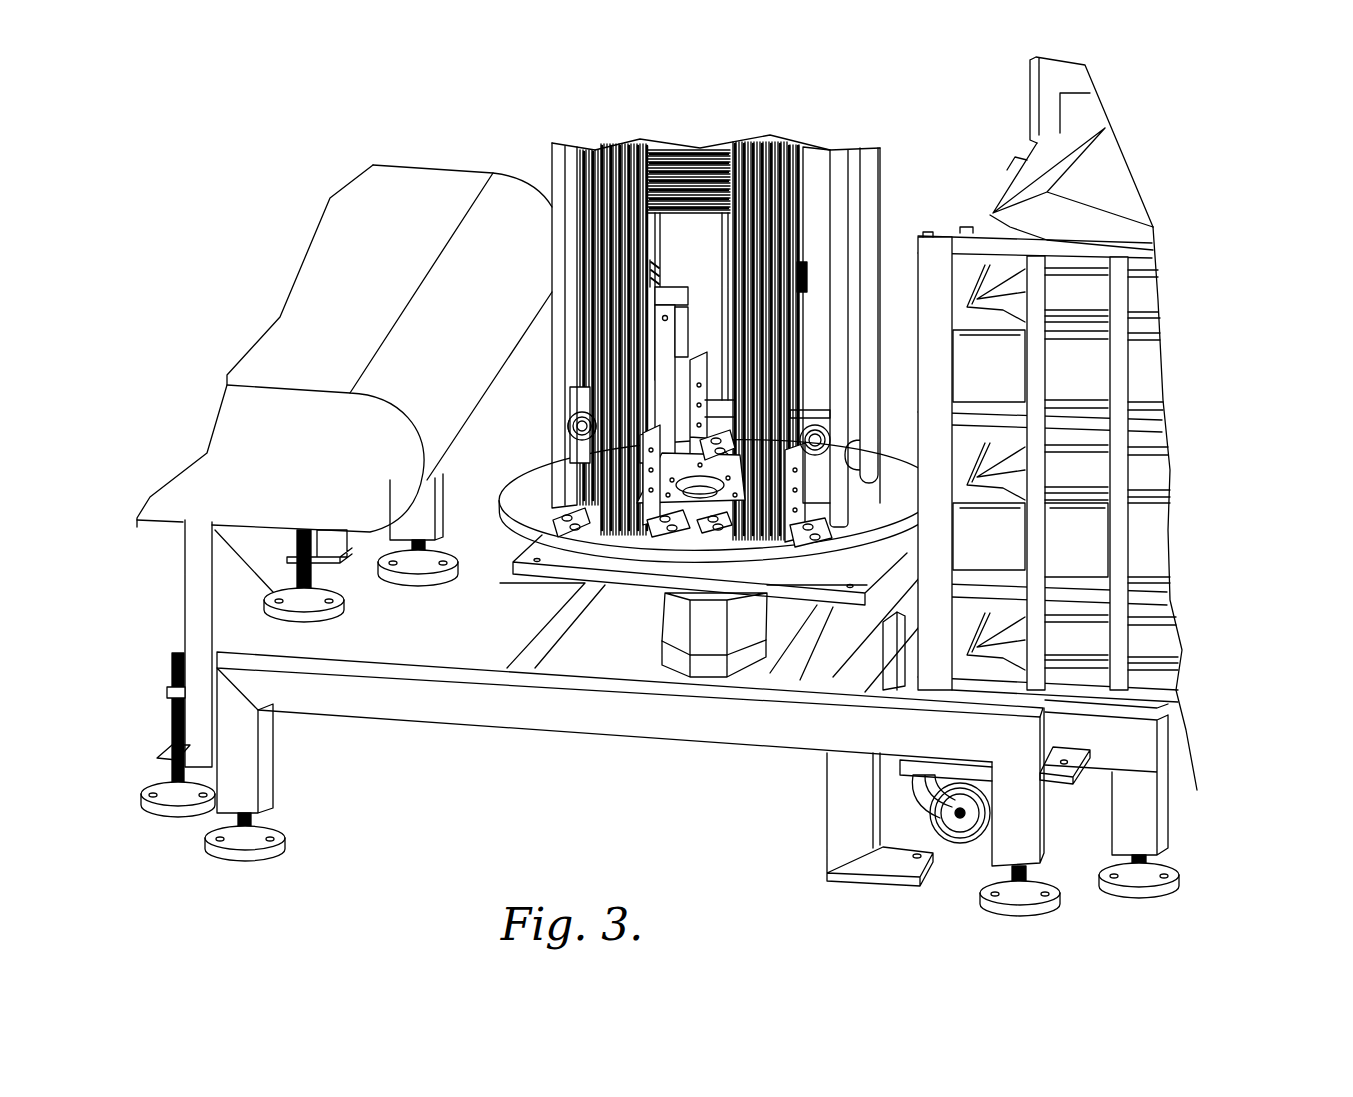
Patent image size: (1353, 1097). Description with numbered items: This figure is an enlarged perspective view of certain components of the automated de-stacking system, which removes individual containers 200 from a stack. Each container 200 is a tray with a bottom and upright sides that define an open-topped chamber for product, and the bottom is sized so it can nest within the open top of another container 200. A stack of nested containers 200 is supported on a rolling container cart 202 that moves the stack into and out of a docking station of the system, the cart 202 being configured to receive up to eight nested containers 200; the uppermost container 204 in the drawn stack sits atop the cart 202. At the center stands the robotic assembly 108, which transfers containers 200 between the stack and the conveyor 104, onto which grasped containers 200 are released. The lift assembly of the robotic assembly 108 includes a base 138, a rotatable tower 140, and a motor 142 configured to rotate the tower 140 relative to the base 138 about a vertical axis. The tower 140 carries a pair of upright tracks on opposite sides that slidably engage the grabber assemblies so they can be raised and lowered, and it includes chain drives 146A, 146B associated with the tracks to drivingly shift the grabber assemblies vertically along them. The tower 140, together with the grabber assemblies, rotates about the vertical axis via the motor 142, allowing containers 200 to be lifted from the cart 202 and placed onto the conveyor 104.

The conveyor 104 is at (360, 215).
The robotic assembly 108 is at (677, 133).
The base 138 is at (548, 725).
The rotatable tower 140 is at (885, 168).
The motor 142 is at (655, 639).
The chain drive 146A is at (870, 240).
The chain drive 146B is at (578, 176).
The container 200 is at (1176, 364).
The rolling container cart 202 is at (1205, 796).
The top tray 204 is at (1033, 155).